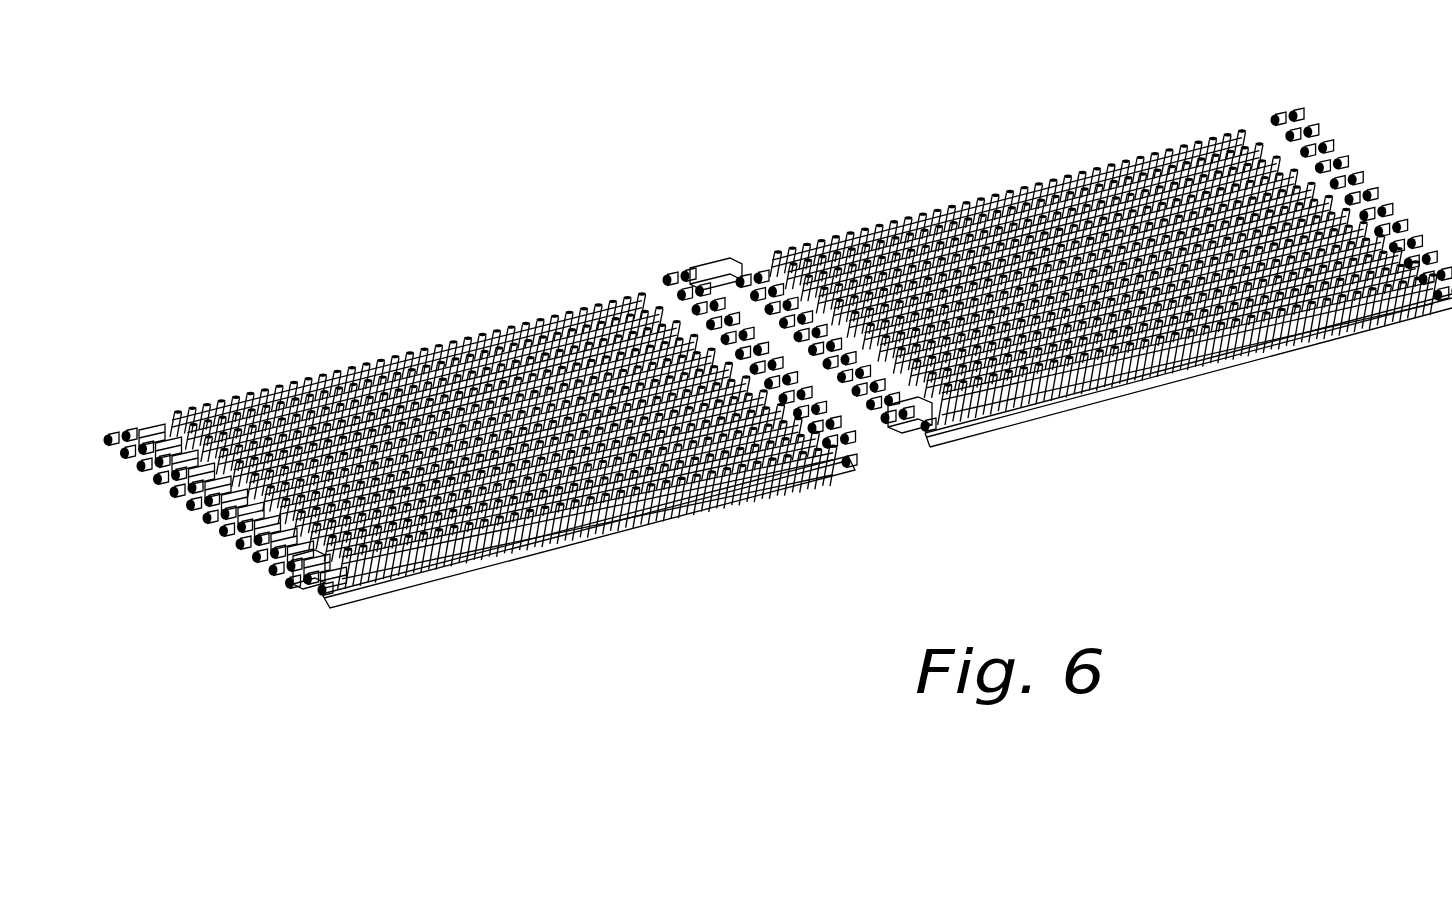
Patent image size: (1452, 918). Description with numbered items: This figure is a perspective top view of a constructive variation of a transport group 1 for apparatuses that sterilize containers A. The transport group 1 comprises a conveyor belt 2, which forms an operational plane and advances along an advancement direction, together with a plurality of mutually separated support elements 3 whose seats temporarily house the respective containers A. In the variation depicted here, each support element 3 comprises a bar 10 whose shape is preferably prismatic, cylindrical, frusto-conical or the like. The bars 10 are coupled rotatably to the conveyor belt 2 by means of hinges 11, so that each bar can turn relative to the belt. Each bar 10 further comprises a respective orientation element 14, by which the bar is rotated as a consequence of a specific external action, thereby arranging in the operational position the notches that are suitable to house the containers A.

The transport group 1 is at (403, 143).
The conveyor belt 2 is at (165, 430).
The support element 3 is at (350, 587).
The bar 10 is at (300, 585).
The hinge 11 is at (318, 597).
The orientation element 14 is at (685, 264).
The container A is at (1205, 340).